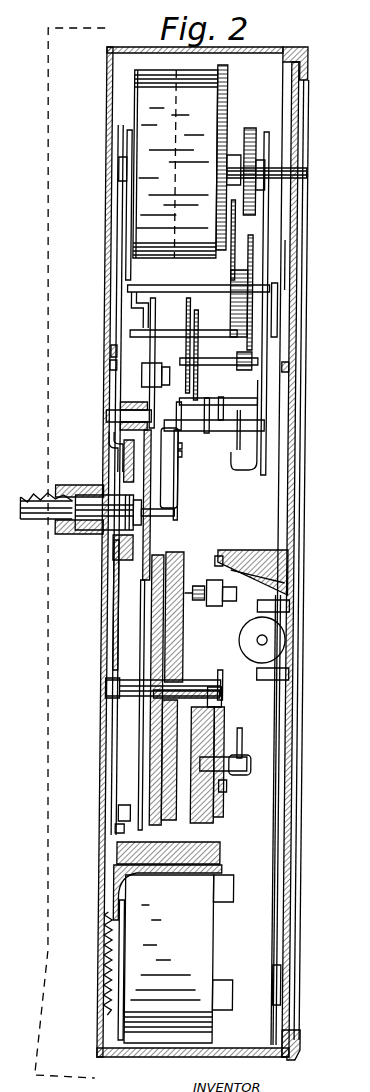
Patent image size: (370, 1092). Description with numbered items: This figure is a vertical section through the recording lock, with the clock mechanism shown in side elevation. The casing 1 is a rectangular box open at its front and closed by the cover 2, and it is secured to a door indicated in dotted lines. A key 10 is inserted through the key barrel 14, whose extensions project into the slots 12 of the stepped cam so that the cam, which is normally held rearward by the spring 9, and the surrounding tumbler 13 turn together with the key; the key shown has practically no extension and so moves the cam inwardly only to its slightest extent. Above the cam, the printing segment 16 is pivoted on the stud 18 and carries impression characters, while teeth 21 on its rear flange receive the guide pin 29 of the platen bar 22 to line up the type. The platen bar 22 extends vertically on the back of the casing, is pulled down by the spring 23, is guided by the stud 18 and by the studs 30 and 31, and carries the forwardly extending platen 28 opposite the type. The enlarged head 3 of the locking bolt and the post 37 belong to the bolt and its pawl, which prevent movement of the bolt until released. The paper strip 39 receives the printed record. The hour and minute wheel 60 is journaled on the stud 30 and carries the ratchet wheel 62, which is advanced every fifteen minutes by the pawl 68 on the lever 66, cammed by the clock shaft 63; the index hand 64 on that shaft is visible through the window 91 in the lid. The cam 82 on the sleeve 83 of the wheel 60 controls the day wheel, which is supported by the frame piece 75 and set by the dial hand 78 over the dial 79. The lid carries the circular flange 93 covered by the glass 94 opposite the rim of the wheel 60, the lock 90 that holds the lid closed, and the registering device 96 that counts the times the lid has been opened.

The casing 1 is at (264, 52).
The cover 2 is at (112, 688).
The enlarged head of the bolt 3 is at (173, 167).
The spring 9 is at (184, 496).
The key 10 is at (38, 512).
The slots 12 is at (84, 486).
The tumbler 13 is at (93, 483).
The key barrel 14 is at (65, 533).
The printing segment 16 is at (153, 548).
The stud 18 is at (115, 420).
The teeth 21 is at (126, 812).
The platen bar 22 is at (112, 350).
The spring 23 is at (130, 945).
The platen 28 is at (230, 858).
The guide pin 29 is at (123, 836).
The stud 30 is at (194, 688).
The stud 31 is at (113, 365).
The post 37 is at (176, 459).
The paper strip 39 is at (208, 956).
The hour and minute wheel 60 is at (163, 562).
The ratchet wheel 62 is at (172, 621).
The shaft 63 is at (136, 293).
The index hand 64 is at (276, 332).
The pawl carrying lever 66 is at (156, 324).
The pawl 68 is at (130, 572).
The frame piece 75 is at (232, 806).
The dial hand 78 is at (249, 746).
The dial 79 is at (236, 787).
The cam 82 is at (229, 680).
The sleeve 83 is at (206, 688).
The lock 90 is at (283, 983).
The window 91 is at (299, 265).
The circular flange 93 is at (249, 550).
The glass 94 is at (228, 562).
The registering device 96 is at (280, 648).